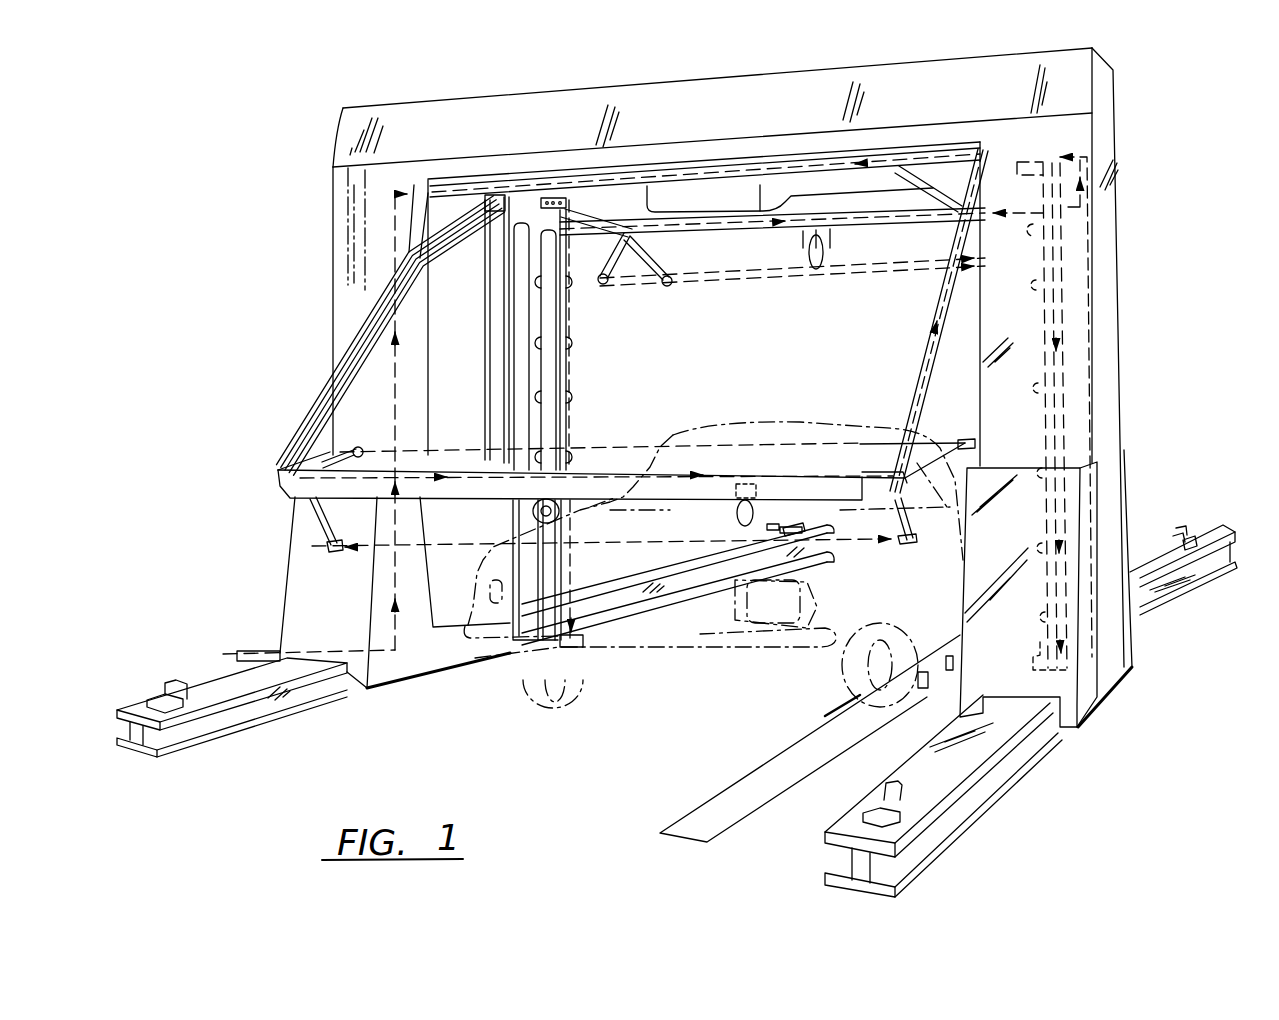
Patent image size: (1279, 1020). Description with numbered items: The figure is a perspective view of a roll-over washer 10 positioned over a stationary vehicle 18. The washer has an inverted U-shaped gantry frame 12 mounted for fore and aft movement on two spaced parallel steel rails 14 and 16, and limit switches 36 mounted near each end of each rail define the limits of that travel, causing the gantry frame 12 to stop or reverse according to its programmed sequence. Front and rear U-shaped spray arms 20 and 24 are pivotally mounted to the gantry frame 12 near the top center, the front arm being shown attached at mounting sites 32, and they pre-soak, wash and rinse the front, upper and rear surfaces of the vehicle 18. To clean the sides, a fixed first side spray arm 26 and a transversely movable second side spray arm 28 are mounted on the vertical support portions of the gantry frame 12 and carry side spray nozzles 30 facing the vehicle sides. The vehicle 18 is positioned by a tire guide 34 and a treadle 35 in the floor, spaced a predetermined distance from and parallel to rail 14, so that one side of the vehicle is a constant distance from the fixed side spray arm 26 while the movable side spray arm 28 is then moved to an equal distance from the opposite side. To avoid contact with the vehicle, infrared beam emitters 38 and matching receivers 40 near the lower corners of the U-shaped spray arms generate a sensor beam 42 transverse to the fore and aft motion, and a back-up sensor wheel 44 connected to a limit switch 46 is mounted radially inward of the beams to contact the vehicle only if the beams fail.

The roll-over washer 10 is at (376, 99).
The gantry frame 12 is at (397, 143).
The rail 14 is at (852, 883).
The rail 16 is at (128, 751).
The vehicle 18 is at (710, 690).
The front U-shaped spray arm 20 is at (276, 462).
The rear U-shaped spray arm 24 is at (586, 246).
The first side spray arm 26 is at (1068, 340).
The second side spray arm 28 is at (578, 373).
The side spray nozzles 30 is at (572, 398).
The mounting sites 32 is at (422, 186).
The tire guide 34 is at (698, 826).
The treadle 35 is at (828, 714).
The limit switches 36 is at (791, 512).
The infrared beam emitters 38 is at (357, 438).
The receivers 40 is at (957, 470).
The sensor beam 42 is at (500, 470).
The sensor wheel 44 is at (727, 537).
The limit switch 46 is at (722, 494).